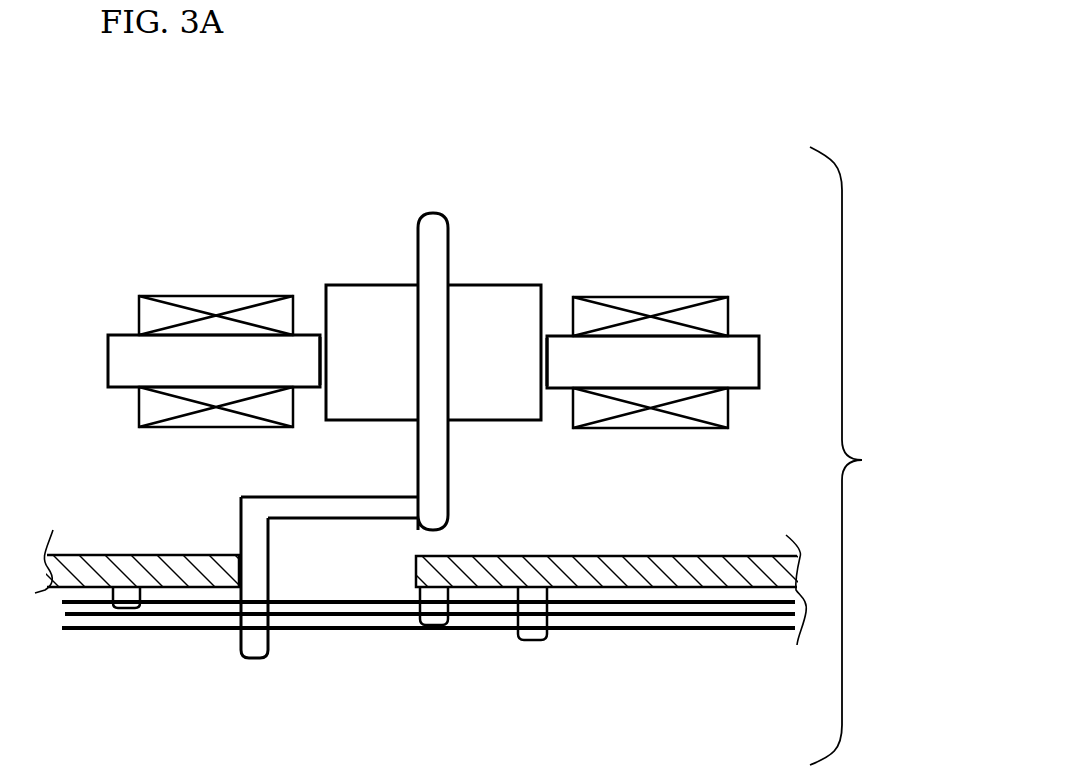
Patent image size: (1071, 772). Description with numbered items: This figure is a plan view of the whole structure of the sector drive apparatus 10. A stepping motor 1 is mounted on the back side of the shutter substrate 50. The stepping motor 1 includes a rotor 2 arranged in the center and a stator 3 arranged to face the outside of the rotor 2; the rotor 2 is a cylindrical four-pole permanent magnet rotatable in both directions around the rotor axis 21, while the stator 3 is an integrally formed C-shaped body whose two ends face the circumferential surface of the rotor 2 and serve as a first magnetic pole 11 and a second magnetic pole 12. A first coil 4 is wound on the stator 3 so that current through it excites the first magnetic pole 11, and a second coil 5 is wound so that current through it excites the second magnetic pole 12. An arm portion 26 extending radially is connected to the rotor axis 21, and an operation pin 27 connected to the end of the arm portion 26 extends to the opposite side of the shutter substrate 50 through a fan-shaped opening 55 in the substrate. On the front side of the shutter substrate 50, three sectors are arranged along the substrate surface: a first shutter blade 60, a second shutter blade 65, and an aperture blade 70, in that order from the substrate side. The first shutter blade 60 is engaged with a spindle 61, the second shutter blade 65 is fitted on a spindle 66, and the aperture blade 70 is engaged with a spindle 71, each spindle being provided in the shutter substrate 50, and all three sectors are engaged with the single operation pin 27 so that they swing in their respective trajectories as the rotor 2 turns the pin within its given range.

The stepping motor 1 is at (368, 215).
The rotor 2 is at (488, 300).
The stator 3 is at (127, 364).
The first coil 4 is at (190, 295).
The second coil 5 is at (705, 298).
The sector drive apparatus 10 is at (857, 456).
The first magnetic pole 11 is at (314, 345).
The second magnetic pole 12 is at (553, 350).
The rotor axis 21 is at (445, 487).
The arm portion 26 is at (305, 507).
The operation pin 27 is at (253, 647).
The shutter substrate 50 is at (685, 557).
The opening 55 is at (332, 590).
The first shutter blade 60 is at (60, 603).
The spindle 61 is at (133, 607).
The second shutter blade 65 is at (357, 618).
The spindle 66 is at (437, 620).
The aperture blade 70 is at (605, 630).
The spindle 71 is at (528, 635).